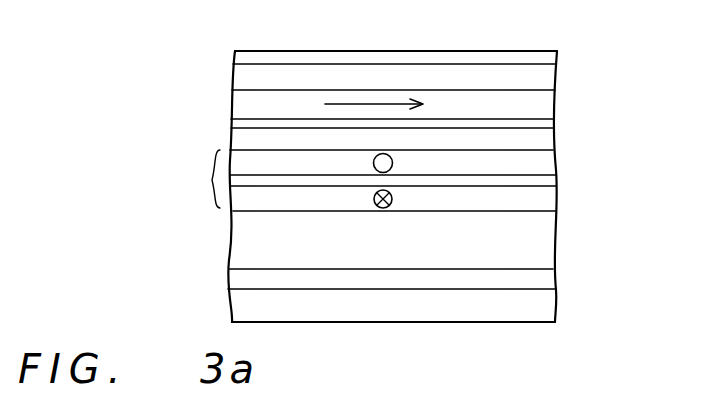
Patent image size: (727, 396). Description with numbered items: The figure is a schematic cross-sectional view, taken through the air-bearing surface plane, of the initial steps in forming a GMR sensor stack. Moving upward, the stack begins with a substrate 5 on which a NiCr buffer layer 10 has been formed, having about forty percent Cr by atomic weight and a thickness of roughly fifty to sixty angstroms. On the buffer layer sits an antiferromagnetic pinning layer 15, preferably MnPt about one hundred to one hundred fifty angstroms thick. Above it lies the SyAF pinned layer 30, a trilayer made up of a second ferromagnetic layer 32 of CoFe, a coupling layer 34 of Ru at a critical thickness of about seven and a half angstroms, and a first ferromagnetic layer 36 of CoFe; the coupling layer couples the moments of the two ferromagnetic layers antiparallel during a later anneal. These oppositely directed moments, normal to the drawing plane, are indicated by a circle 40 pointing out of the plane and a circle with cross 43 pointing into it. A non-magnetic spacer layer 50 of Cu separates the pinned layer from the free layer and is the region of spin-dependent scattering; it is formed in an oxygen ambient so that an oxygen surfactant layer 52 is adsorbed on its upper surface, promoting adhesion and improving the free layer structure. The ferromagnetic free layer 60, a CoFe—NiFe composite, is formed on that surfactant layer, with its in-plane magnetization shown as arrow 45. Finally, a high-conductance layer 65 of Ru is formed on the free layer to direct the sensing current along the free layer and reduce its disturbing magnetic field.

The substrate 5 is at (543, 308).
The NiCr buffer layer 10 is at (543, 283).
The antiferromagnetic pinning layer 15 is at (540, 237).
The SyAF pinned layer 30 is at (196, 179).
The second ferromagnetic layer 32 is at (540, 197).
The coupling layer 34 is at (540, 182).
The first ferromagnetic layer 36 is at (537, 162).
The circle 40 is at (391, 168).
The circle with cross 43 is at (376, 206).
The arrow 45 is at (368, 106).
The non-magnetic spacer layer 50 is at (538, 142).
The oxygen surfactant layer 52 is at (550, 125).
The ferromagnetic free layer 60 is at (545, 83).
The high-conductance layer 65 is at (545, 62).